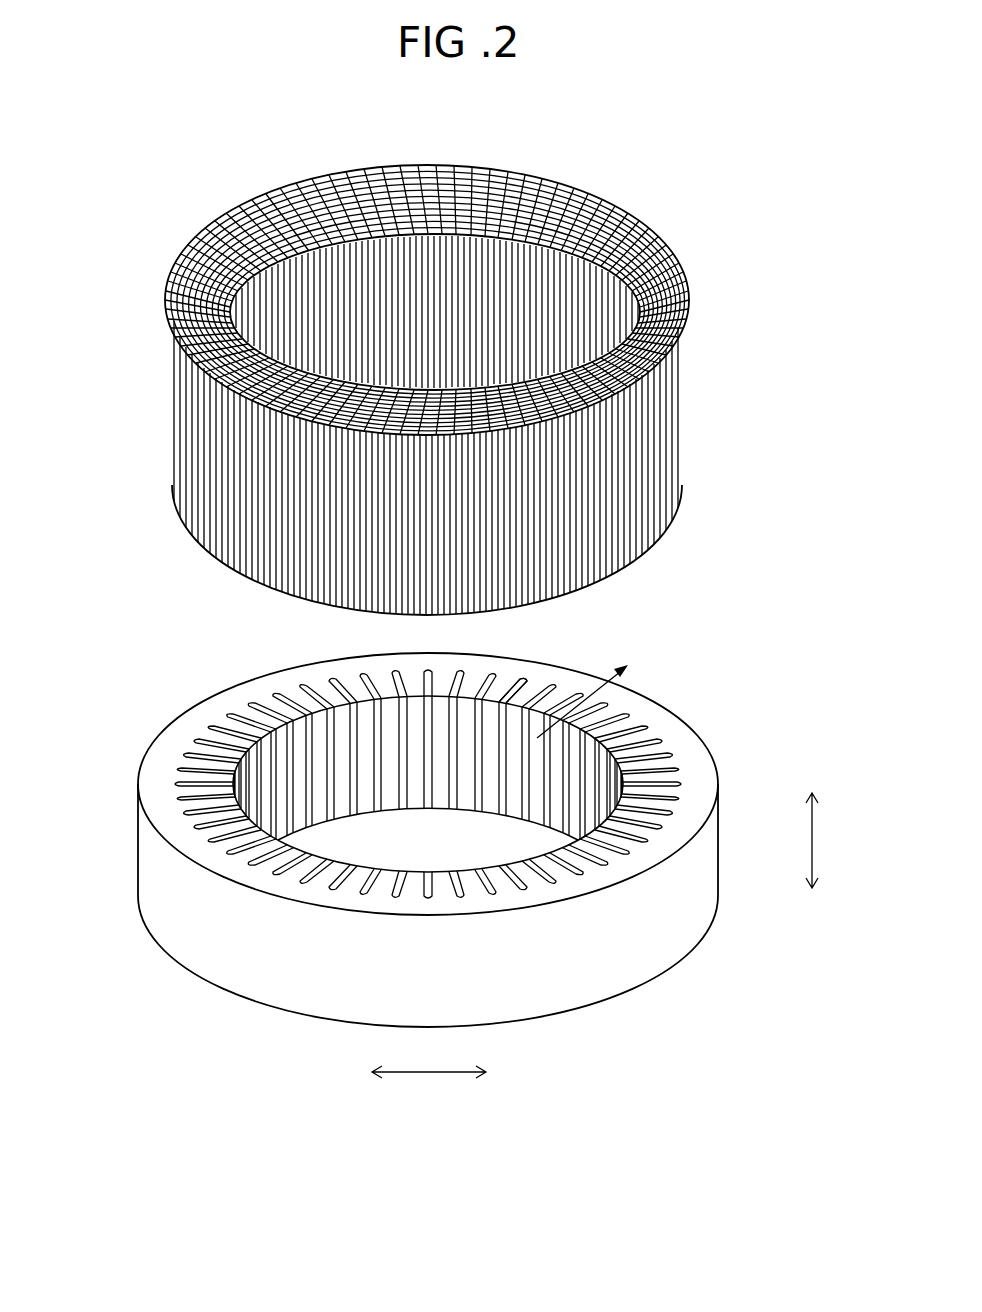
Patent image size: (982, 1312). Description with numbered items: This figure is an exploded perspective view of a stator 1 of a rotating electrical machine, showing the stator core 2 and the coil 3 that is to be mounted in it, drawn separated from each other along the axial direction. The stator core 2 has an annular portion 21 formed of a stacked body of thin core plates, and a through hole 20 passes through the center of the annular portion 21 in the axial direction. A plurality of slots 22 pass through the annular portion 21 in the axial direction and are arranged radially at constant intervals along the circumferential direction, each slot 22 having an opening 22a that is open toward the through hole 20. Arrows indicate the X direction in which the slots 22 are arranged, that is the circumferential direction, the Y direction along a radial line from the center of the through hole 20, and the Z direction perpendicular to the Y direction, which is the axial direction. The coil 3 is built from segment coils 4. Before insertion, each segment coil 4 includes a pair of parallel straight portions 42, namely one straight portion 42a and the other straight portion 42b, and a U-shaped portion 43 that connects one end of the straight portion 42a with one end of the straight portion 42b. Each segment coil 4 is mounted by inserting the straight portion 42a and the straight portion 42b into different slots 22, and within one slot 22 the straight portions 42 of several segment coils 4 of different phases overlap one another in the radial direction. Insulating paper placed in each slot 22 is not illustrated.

The stator 1 is at (812, 566).
The stator core 2 is at (727, 722).
The coil 3 is at (724, 514).
The segment coil 4 is at (233, 212).
The through hole 20 is at (401, 855).
The annular portion 21 is at (160, 772).
The slot 22 is at (253, 718).
The opening 22a is at (500, 806).
The straight portion 42 is at (183, 440).
The straight portion 42a is at (203, 465).
The straight portion 42b is at (441, 288).
The U-shaped portion 43 is at (614, 215).